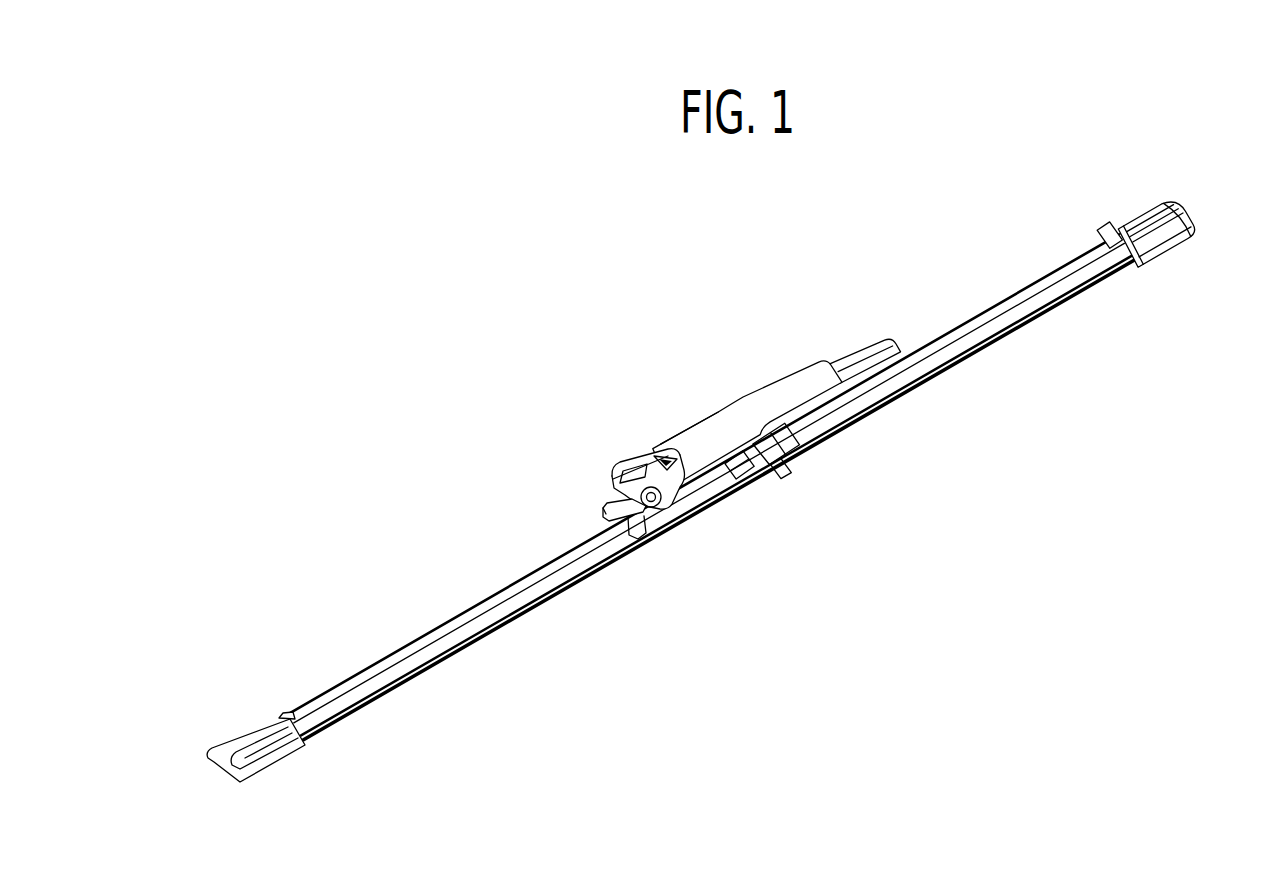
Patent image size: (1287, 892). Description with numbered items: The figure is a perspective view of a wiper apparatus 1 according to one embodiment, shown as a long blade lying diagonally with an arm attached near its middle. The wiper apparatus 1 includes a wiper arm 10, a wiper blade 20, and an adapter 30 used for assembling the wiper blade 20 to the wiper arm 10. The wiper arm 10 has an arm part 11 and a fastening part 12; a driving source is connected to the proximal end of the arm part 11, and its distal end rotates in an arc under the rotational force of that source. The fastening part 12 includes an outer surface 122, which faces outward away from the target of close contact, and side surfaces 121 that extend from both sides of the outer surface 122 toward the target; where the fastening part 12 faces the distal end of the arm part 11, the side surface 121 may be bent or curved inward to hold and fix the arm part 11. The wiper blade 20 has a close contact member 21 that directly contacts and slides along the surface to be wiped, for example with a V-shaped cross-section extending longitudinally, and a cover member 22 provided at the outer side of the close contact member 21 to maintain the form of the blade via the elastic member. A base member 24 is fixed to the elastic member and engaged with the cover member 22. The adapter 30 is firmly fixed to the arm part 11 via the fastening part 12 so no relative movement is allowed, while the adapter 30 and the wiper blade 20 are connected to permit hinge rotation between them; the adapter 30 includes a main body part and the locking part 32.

The wiper apparatus 1 is at (475, 283).
The wiper arm 10 is at (836, 326).
The arm part 11 is at (883, 334).
The fastening part 12 is at (784, 388).
The side surface 121 is at (743, 462).
The outer surface 122 is at (710, 427).
The wiper blade 20 is at (553, 621).
The close contact member 21 is at (1012, 333).
The cover member 22 is at (1023, 306).
The base member 24 is at (785, 477).
The adapter 30 is at (624, 452).
The locking part 32 is at (641, 454).